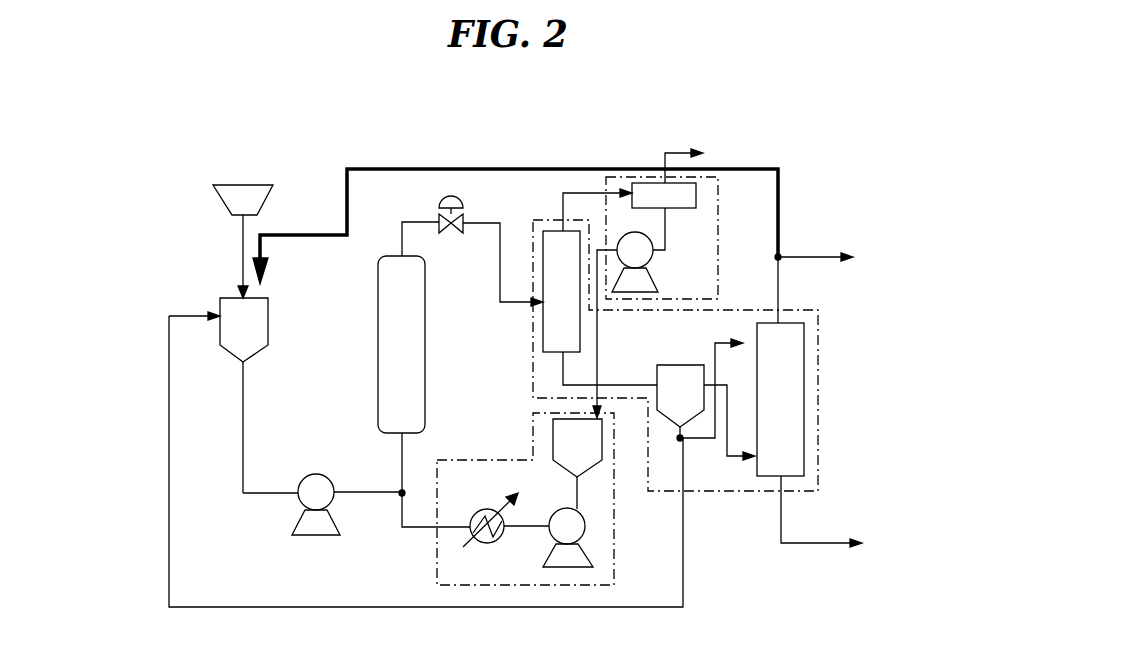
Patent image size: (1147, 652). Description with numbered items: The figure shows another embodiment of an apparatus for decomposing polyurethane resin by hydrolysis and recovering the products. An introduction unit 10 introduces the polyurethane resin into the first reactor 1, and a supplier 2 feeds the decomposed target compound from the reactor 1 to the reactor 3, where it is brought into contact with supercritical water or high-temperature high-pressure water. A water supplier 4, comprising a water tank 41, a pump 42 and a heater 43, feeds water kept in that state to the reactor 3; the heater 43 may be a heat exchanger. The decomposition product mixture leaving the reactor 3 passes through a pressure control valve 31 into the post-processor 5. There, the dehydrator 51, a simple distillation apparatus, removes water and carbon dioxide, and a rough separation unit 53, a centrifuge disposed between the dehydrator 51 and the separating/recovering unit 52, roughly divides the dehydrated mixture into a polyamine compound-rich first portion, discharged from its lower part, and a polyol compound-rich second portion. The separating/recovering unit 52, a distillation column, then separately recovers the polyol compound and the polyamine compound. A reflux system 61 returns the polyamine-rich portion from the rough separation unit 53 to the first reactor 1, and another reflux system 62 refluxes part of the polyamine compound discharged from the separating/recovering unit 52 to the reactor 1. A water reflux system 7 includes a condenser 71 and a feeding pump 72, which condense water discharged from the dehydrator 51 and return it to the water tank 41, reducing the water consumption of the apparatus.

The reactor 1 is at (258, 311).
The supplier 2 is at (313, 480).
The reactor 3 is at (384, 333).
The water supplier 4 is at (437, 550).
The post-processor 5 is at (808, 306).
The water reflux system 7 is at (628, 166).
The introduction unit 10 is at (262, 197).
The pressure control valve 31 is at (456, 201).
The water tank 41 is at (595, 449).
The pump 42 is at (585, 526).
The heater 43 is at (486, 509).
The dehydrator 51 is at (545, 333).
The separating/recovering unit 52 is at (800, 369).
The rough separation unit 53 is at (683, 365).
The reflux system 61 is at (683, 565).
The reflux system 62 is at (778, 166).
The condenser 71 is at (683, 208).
The pump 72 is at (645, 286).